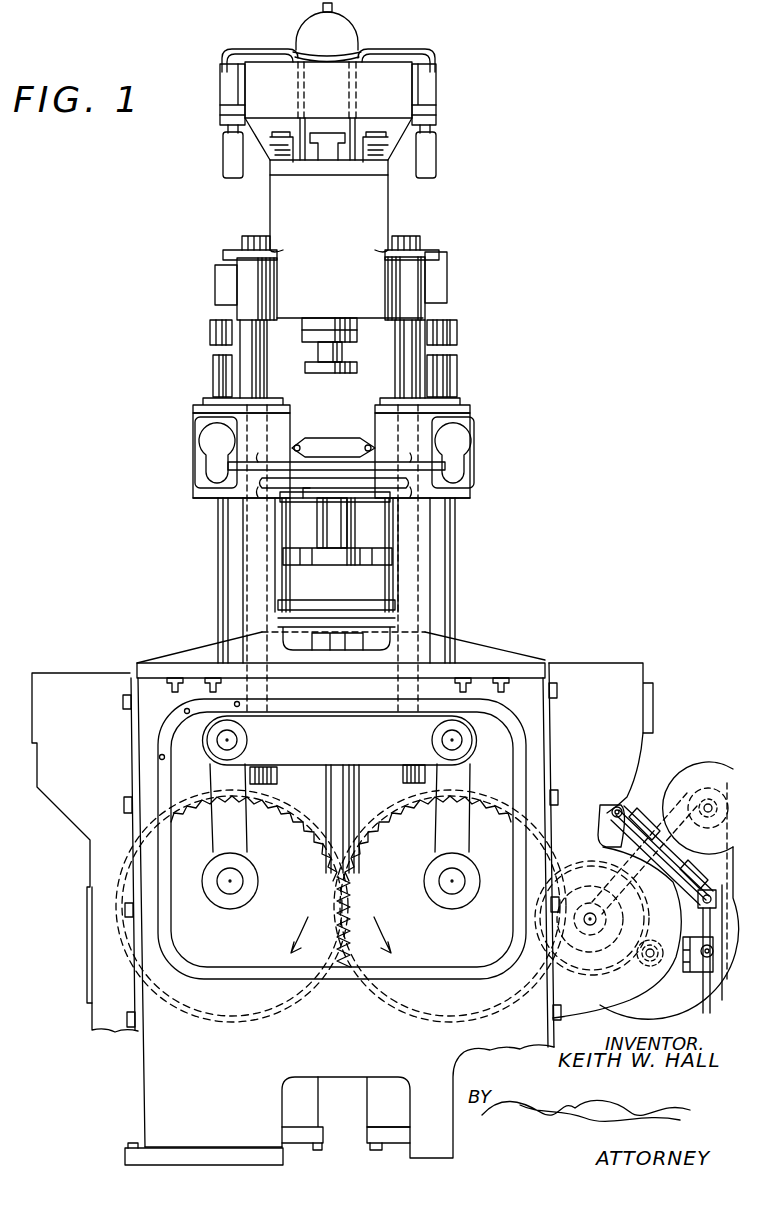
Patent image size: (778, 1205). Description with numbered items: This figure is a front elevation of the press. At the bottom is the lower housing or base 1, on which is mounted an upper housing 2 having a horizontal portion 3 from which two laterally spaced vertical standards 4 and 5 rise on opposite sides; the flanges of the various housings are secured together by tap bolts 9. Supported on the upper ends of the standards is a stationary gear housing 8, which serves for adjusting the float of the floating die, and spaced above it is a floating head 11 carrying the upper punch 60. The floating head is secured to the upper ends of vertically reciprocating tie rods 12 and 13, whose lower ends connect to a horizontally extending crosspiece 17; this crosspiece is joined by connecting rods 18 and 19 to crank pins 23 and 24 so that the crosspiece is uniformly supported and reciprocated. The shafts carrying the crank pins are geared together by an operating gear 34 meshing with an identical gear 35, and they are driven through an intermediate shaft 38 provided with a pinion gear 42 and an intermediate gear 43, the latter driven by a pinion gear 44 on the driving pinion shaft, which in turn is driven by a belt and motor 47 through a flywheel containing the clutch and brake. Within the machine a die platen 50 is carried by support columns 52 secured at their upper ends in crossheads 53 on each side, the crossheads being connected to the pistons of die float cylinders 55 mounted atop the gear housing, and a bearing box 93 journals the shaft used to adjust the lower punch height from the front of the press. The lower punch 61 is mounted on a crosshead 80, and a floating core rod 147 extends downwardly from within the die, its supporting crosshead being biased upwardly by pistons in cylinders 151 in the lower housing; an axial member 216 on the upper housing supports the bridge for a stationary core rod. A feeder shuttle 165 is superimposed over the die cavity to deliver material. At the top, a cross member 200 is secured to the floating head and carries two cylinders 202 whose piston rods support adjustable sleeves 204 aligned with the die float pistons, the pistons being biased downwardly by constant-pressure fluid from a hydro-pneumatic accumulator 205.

The lower housing 1 is at (388, 887).
The upper housing 2 is at (466, 560).
The horizontal portion 3 is at (506, 662).
The vertical standard 4 is at (452, 528).
The vertical standard 5 is at (240, 540).
The stationary gear housing 8 is at (480, 444).
The tap bolts 9 is at (212, 676).
The floating head 11 is at (391, 208).
The tie rod 12 is at (401, 370).
The tie rod 13 is at (262, 368).
The crosspiece 17 is at (303, 765).
The connecting rod 18 is at (462, 778).
The connecting rod 19 is at (221, 776).
The crank pin 23 is at (233, 880).
The crank pin 24 is at (452, 880).
The operating gear 34 is at (381, 824).
The gear 35 is at (299, 824).
The intermediate shaft 38 is at (600, 924).
The pinion gear 42 is at (590, 940).
The intermediate gear 43 is at (606, 968).
The pinion gear 44 is at (650, 960).
The belt and motor 47 is at (701, 754).
The die platen 50 is at (303, 492).
The support column 52 is at (212, 352).
The crosshead 53 is at (216, 287).
The die float cylinder 55 is at (214, 368).
The upper punch 60 is at (330, 374).
The lower punch 61 is at (329, 537).
The crosshead 80 is at (358, 563).
The bearing box 93 is at (77, 690).
The floating core rod 147 is at (354, 800).
The cylinder 151 is at (378, 1106).
The feeder shuttle 165 is at (348, 433).
The cross member 200 is at (385, 72).
The cylinder 202 is at (222, 103).
The sleeve 204 is at (233, 154).
The hydro-pneumatic accumulator 205 is at (306, 33).
The axial member 216 is at (343, 612).